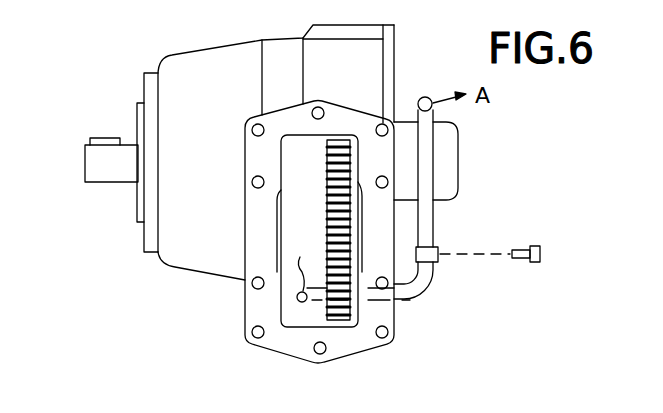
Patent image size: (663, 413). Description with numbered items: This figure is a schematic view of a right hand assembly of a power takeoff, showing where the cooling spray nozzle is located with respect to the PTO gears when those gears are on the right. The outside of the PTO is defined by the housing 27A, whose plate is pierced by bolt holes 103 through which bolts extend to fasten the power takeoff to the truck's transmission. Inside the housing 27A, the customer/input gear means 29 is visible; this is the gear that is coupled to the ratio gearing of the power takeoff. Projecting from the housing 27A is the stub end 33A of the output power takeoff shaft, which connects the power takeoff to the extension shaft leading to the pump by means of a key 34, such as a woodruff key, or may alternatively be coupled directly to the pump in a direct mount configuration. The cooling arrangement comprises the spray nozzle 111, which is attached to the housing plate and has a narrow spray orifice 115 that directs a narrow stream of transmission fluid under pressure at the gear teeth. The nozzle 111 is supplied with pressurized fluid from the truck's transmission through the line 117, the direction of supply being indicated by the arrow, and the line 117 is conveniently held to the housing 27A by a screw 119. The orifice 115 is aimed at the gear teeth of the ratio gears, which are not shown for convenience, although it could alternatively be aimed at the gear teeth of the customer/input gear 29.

The housing 27A is at (237, 88).
The customer/input gear means 29 is at (338, 151).
The stub end 33A is at (107, 172).
The key 34 is at (100, 137).
The bolt holes 103 is at (377, 122).
The spray nozzle 111 is at (298, 258).
The spray orifice 115 is at (297, 299).
The line 117 is at (433, 209).
The screw 119 is at (523, 247).